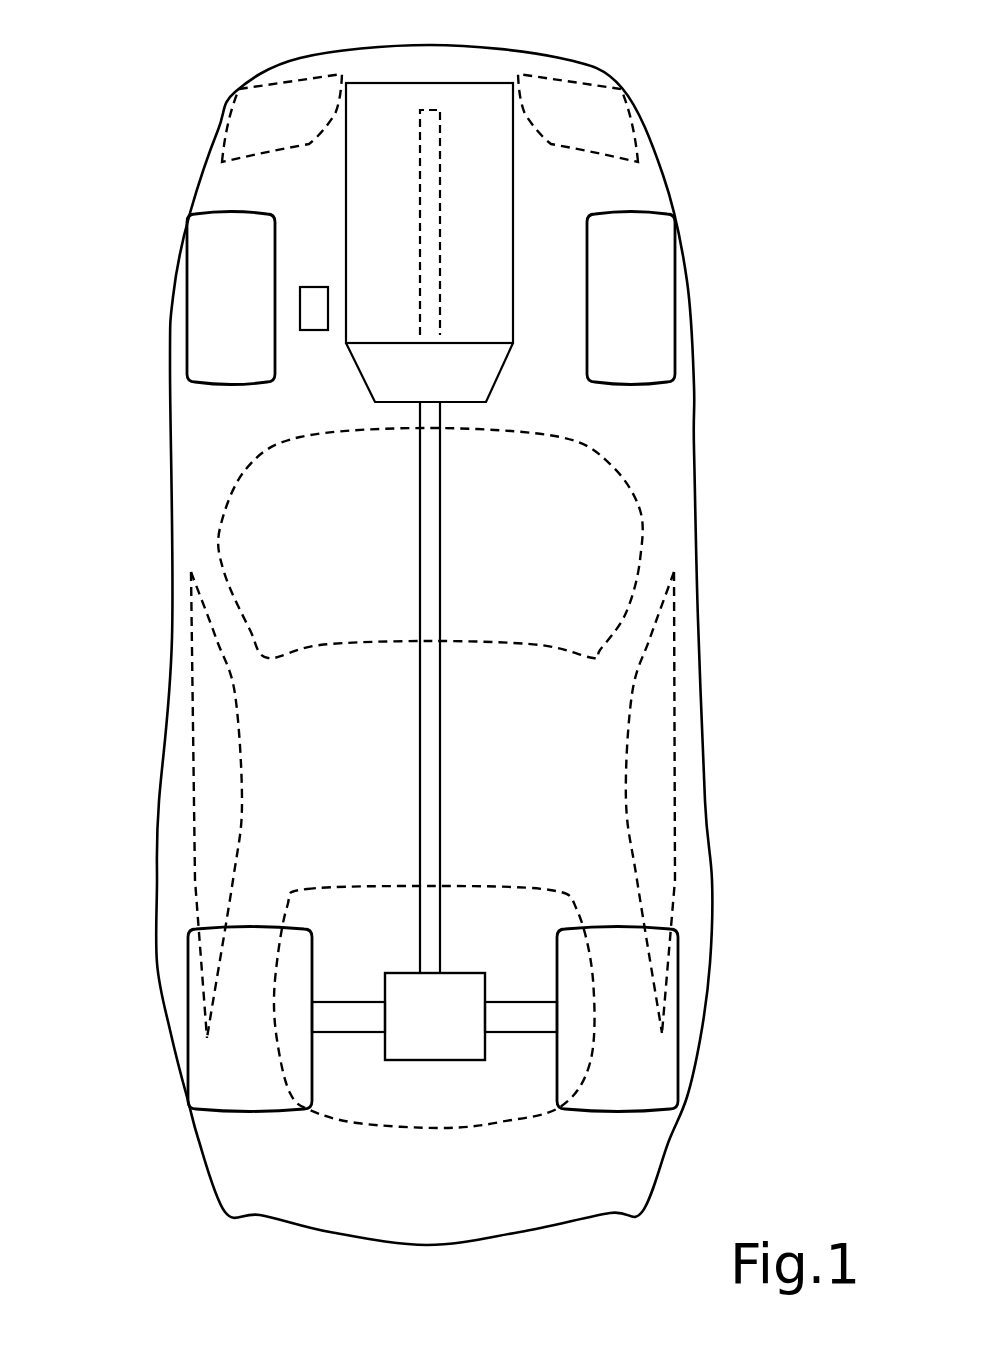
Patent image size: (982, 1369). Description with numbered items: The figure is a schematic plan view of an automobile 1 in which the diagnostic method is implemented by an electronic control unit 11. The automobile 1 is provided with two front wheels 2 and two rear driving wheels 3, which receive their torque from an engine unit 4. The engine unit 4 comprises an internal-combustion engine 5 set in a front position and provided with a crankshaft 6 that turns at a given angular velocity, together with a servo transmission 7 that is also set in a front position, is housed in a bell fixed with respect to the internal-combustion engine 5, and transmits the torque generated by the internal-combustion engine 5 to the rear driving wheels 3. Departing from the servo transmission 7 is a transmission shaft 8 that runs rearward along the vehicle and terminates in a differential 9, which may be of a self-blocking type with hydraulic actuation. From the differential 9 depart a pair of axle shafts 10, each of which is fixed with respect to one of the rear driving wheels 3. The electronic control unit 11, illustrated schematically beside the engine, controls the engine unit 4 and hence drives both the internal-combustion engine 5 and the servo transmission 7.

The automobile 1 is at (135, 1189).
The front wheels 2 is at (232, 340).
The rear driving wheels 3 is at (202, 1057).
The engine unit 4 is at (705, 160).
The internal-combustion engine 5 is at (484, 90).
The crankshaft 6 is at (432, 200).
The servo transmission 7 is at (419, 391).
The transmission shaft 8 is at (430, 662).
The differential 9 is at (440, 1049).
The axle shafts 10 is at (327, 1027).
The electronic control unit 11 is at (312, 295).